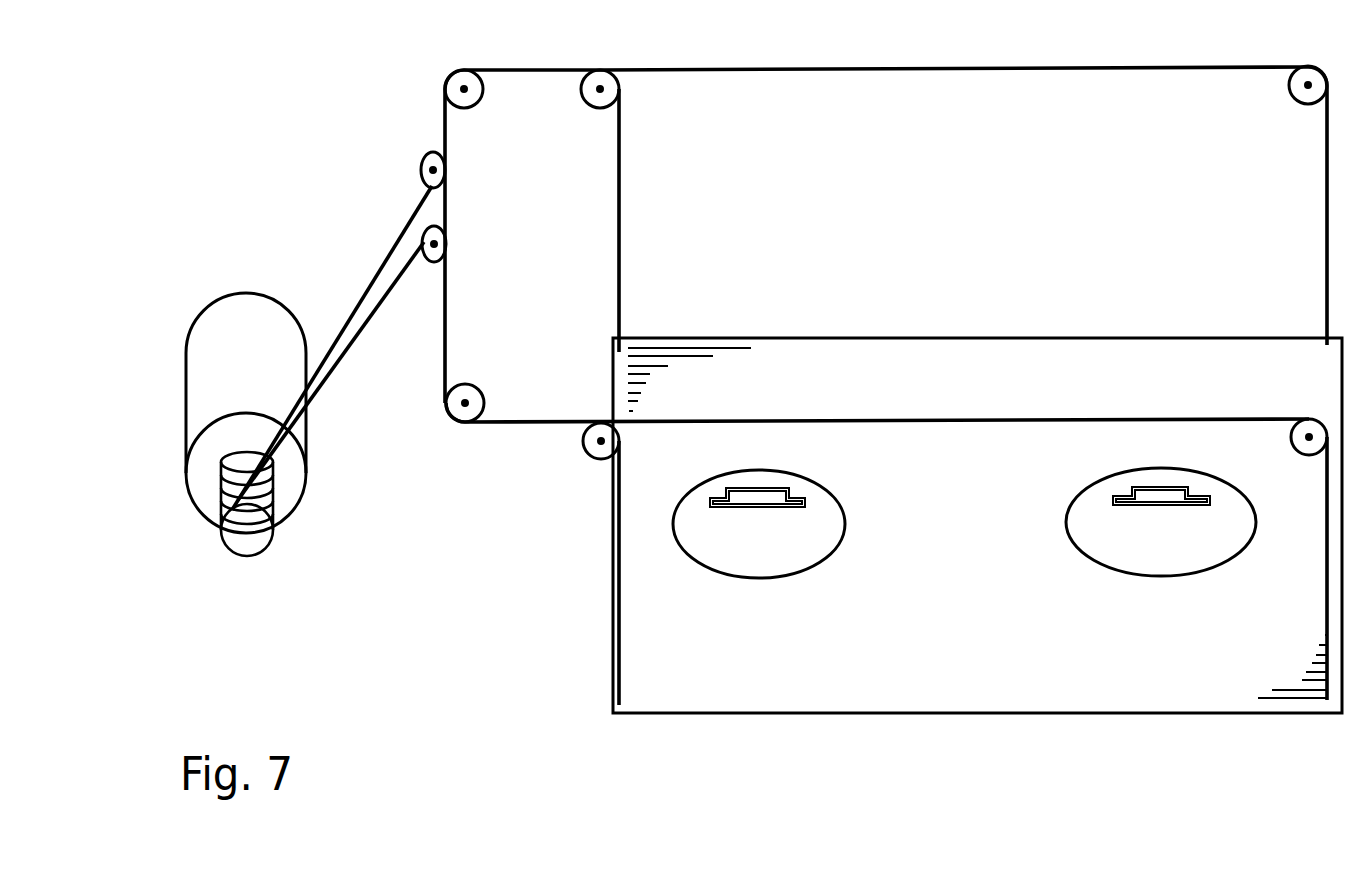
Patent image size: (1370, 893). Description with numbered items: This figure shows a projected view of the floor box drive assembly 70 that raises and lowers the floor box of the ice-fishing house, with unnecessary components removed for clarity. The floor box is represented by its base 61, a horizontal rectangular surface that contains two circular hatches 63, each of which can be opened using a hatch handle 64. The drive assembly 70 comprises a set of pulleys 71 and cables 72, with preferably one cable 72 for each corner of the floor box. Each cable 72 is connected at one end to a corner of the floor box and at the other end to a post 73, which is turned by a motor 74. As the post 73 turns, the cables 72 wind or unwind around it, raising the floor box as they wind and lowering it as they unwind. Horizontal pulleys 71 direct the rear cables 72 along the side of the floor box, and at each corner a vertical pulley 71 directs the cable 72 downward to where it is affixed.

The floor box drive assembly 70 is at (330, 178).
The pulleys 71 is at (426, 162).
The cables 72 is at (698, 65).
The post 73 is at (253, 540).
The motor 74 is at (216, 363).
The base 61 is at (947, 636).
The circular hatches 63 is at (729, 553).
The hatch handles 64 is at (784, 489).